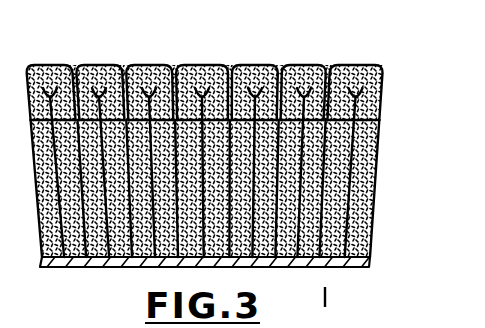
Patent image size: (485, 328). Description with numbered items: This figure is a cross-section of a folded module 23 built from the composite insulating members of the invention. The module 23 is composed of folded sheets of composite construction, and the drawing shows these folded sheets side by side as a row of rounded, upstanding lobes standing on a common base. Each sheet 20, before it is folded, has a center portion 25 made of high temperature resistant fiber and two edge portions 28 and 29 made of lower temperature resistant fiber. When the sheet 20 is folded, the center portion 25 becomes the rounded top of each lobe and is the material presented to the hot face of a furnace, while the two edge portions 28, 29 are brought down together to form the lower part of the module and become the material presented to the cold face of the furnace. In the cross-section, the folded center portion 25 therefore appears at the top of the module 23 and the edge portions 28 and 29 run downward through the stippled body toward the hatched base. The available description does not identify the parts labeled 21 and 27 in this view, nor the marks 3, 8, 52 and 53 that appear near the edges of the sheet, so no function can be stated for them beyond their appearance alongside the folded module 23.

The section line 3 is at (0, 193).
The fragment numeral 8 is at (11, 8).
The sheet 20 is at (201, 93).
The base strip 21 is at (290, 261).
The folded module 23 is at (227, 158).
The center portion 25 is at (370, 66).
The side wall 27 is at (382, 104).
The edge portion 28 is at (333, 232).
The edge portion 29 is at (357, 197).
The fragment numeral 52 is at (218, 326).
The fragment numeral 53 is at (113, 323).